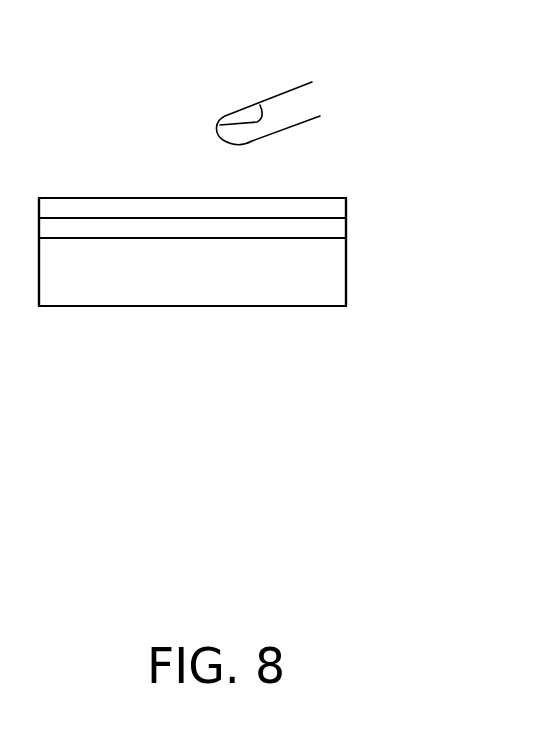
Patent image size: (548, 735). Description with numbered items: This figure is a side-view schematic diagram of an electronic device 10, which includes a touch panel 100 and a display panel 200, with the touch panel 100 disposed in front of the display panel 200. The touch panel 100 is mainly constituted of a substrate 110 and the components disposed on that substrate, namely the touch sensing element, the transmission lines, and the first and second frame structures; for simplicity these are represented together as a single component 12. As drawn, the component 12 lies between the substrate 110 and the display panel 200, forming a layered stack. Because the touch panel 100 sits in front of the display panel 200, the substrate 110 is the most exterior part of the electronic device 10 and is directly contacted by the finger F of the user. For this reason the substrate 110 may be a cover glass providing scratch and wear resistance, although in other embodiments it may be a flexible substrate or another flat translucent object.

The finger F is at (288, 103).
The electronic device 10 is at (498, 418).
The touch panel 100 is at (437, 160).
The substrate 110 is at (333, 207).
The component 12 is at (338, 229).
The display panel 200 is at (330, 283).